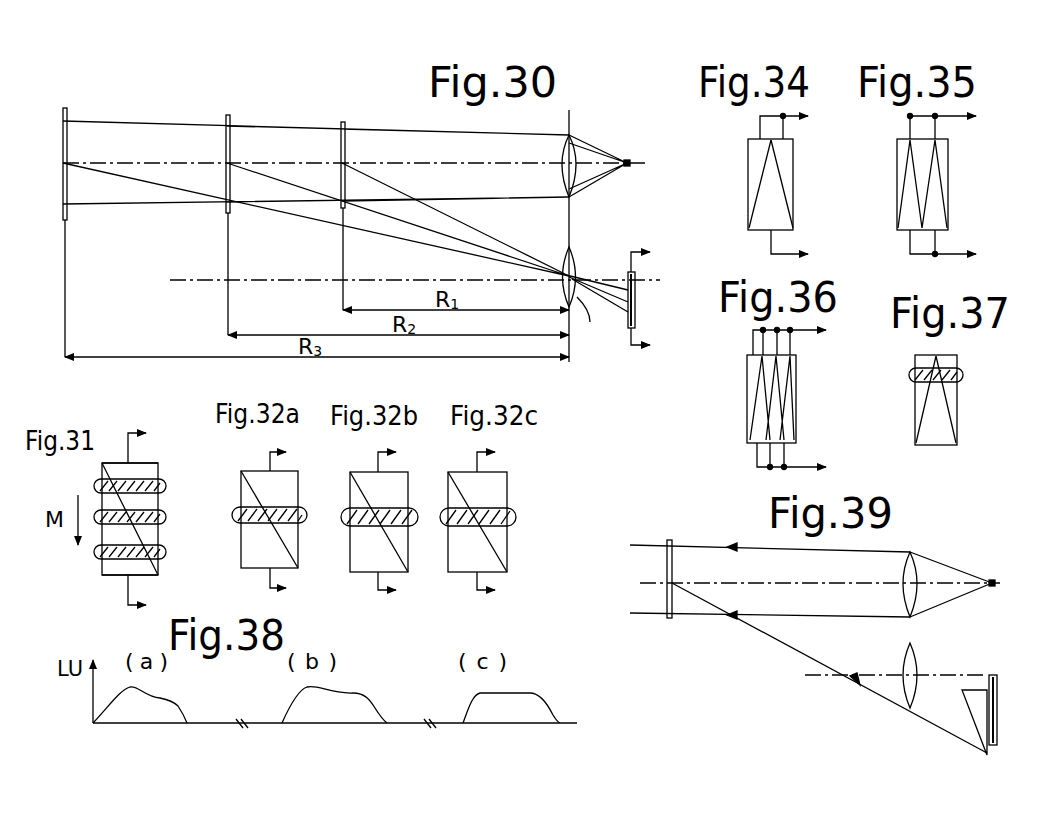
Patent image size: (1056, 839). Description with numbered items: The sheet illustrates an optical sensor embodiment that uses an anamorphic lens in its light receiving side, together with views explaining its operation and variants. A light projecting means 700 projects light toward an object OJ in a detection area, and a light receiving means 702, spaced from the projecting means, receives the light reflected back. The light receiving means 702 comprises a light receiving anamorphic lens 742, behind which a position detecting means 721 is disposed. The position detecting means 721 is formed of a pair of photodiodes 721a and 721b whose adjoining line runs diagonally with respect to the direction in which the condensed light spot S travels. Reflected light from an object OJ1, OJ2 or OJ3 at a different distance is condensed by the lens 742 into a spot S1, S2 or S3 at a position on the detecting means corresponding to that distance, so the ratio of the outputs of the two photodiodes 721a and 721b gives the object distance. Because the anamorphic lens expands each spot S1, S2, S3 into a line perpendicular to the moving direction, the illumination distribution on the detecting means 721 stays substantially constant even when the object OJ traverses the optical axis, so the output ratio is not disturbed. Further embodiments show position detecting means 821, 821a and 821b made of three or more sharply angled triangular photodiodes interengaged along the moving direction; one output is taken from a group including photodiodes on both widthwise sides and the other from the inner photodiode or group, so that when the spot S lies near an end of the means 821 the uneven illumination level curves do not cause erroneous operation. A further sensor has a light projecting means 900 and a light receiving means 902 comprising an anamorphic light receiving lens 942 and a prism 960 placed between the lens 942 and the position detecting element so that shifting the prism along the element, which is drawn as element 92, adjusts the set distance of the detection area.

In FIG. 30, the light projecting means 700 is at (603, 137).
In FIG. 30, the light receiving means 702 is at (582, 268).
In FIG. 30, the position detecting means 721 is at (636, 300).
In FIG. 31, the position detecting means 721 is at (146, 461).
In FIG. 31, the photodiode 721a is at (158, 473).
In FIG. 32A, the photodiode 721a is at (293, 482).
In FIG. 32B, the photodiode 721a is at (410, 476).
In FIG. 32C, the photodiode 721a is at (509, 476).
In FIG. 31, the photodiode 721b is at (105, 570).
In FIG. 32A, the photodiode 721b is at (243, 562).
In FIG. 32B, the photodiode 721b is at (363, 565).
In FIG. 32C, the photodiode 721b is at (465, 565).
In FIG. 30, the light receiving anamorphic lens 742 is at (601, 323).
In FIG. 34, the position detecting means 821 is at (793, 178).
In FIG. 37, the position detecting means 821 is at (957, 403).
In FIG. 35, the position detecting means 821a is at (948, 178).
In FIG. 36, the position detecting means 821b is at (796, 398).
In FIG. 39, the light projecting means 900 is at (993, 573).
In FIG. 39, the light receiving means 902 is at (972, 670).
In FIG. 39, the anamorphic light receiving lens 942 is at (903, 697).
In FIG. 39, the prism 960 is at (977, 720).
In FIG. 39, the photo-sensor 92 is at (997, 700).
In FIG. 37, the condensed light spot S is at (964, 375).
In FIG. 31, the condensed light spot S1 is at (166, 553).
In FIG. 31, the condensed light spot S2 is at (166, 522).
In FIG. 31, the condensed light spot S3 is at (166, 490).
In FIG. 39, the object OJ is at (672, 548).
In FIG. 30, the object OJ1 is at (345, 126).
In FIG. 30, the object OJ2 is at (230, 119).
In FIG. 30, the object OJ3 is at (67, 113).